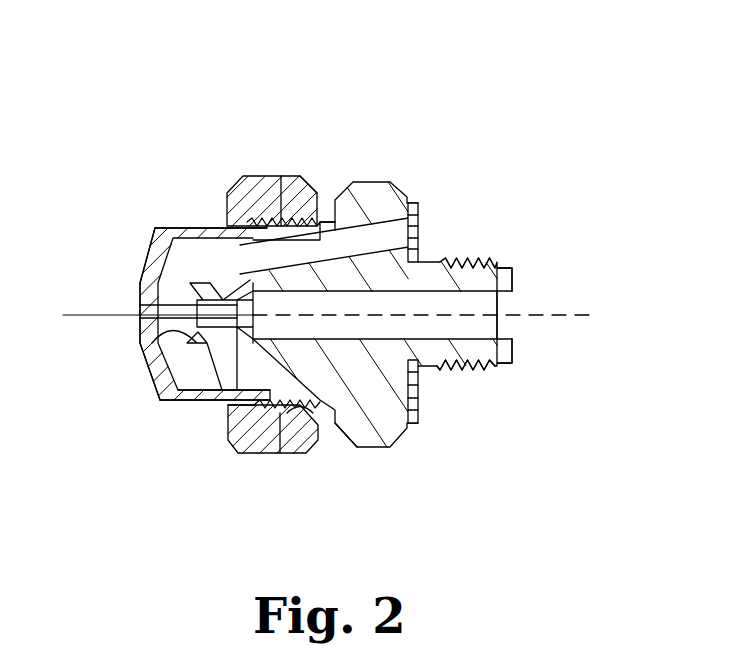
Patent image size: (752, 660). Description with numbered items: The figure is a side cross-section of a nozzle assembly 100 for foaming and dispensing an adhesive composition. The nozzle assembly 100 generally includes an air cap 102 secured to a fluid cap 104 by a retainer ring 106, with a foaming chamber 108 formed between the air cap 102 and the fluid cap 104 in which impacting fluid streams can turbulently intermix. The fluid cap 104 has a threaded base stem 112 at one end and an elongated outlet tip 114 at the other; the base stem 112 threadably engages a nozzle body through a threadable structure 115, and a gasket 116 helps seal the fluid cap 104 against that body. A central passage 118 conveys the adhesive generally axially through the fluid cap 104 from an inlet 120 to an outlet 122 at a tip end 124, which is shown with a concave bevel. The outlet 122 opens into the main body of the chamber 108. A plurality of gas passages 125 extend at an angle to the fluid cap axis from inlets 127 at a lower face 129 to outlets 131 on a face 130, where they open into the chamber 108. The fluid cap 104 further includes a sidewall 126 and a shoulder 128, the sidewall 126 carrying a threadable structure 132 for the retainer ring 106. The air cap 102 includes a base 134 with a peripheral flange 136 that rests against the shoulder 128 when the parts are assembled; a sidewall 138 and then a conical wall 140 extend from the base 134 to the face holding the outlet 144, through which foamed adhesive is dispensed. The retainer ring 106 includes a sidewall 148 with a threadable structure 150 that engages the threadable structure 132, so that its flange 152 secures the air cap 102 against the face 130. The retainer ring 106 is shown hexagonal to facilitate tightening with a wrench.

The nozzle assembly 100 is at (193, 90).
The air cap 102 is at (145, 230).
The fluid cap 104 is at (374, 172).
The retainer ring 106 is at (263, 465).
The foaming chamber 108 is at (147, 380).
The threaded base stem 112 is at (512, 270).
The elongated outlet tip 114 is at (222, 345).
The threadable structure 115 is at (490, 365).
The gasket 116 is at (416, 252).
The central passage 118 is at (512, 292).
The inlet 120 is at (512, 328).
The outlet 122 is at (157, 305).
The tip end 124 is at (157, 332).
The gas passages 125 is at (323, 207).
The sidewall 126 is at (312, 450).
The inlets 127 is at (416, 212).
The shoulder 128 is at (235, 452).
The lower face 129 is at (414, 258).
The face 130 is at (212, 395).
The outlets 131 is at (242, 263).
The threadable structure 132 is at (283, 455).
The base 134 is at (281, 185).
The peripheral flange 136 is at (242, 176).
The sidewall 138 is at (200, 227).
The conical wall 140 is at (150, 268).
The outlet 144 is at (143, 297).
The sidewall 148 is at (301, 175).
The threadable structure 150 is at (348, 440).
The flange 152 is at (228, 408).